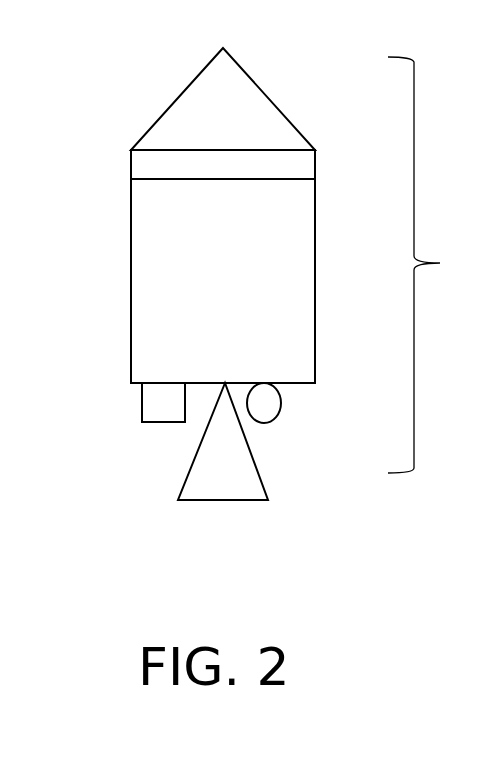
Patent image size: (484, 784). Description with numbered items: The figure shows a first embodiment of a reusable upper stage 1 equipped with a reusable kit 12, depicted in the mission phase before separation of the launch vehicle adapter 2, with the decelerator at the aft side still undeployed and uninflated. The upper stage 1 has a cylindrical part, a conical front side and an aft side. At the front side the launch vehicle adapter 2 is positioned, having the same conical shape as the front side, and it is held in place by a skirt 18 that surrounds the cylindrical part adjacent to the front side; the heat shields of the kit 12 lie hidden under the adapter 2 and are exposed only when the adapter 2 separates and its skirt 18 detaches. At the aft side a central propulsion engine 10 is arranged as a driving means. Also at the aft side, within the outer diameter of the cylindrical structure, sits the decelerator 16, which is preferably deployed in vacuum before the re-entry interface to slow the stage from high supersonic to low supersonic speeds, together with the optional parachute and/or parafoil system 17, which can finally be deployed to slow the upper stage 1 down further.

The upper stage 1 is at (124, 49).
The launch vehicle adapter 2 is at (256, 100).
The skirt 18 is at (302, 168).
The parachute and/or parafoil system 17 is at (142, 403).
The decelerator 16 is at (282, 403).
The central propulsion engine 10 is at (223, 468).
The reusable kit 12 is at (436, 265).